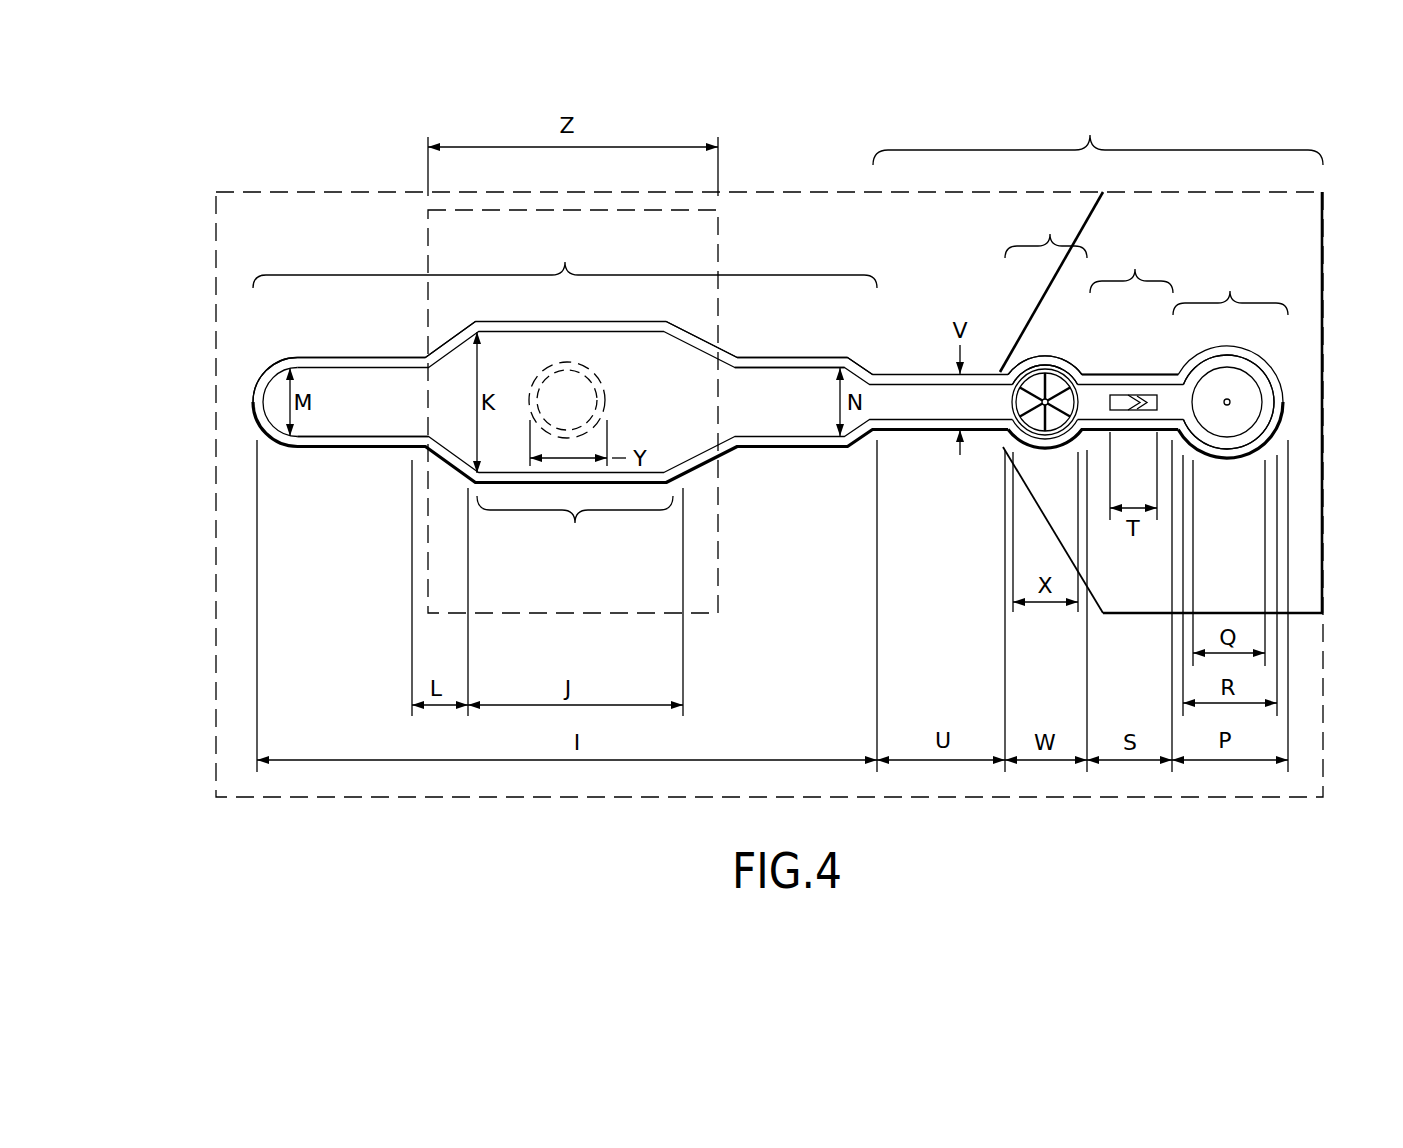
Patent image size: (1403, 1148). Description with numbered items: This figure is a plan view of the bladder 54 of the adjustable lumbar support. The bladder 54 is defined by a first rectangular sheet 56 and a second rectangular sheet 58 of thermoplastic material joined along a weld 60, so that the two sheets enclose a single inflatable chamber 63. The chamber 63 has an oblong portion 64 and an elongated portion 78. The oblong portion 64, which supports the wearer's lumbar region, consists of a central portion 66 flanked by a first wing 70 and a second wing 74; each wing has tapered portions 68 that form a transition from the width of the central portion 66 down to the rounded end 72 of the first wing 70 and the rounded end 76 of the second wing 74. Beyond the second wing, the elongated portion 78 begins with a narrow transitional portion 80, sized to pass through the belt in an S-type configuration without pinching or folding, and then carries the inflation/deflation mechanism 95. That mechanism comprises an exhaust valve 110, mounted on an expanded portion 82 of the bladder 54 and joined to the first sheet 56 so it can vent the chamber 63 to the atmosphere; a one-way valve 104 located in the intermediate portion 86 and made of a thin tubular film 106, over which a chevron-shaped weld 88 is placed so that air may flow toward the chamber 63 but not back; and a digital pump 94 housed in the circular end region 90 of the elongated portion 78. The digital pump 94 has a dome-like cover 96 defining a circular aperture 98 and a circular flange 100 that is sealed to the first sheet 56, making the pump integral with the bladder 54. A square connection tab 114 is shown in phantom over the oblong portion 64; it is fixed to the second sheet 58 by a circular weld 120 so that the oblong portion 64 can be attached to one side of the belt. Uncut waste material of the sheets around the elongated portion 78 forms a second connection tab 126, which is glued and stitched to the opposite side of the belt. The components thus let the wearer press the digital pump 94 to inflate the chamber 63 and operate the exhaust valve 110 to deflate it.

The bladder 54 is at (812, 462).
The first rectangular sheet 56 is at (782, 218).
The second rectangular sheet 58 is at (736, 418).
The weld 60 is at (340, 445).
The inflatable chamber 63 is at (822, 400).
The oblong portion 64 is at (565, 257).
The central portion 66 is at (575, 528).
The tapered portions 68 is at (444, 354).
The first wing 70 is at (355, 358).
The rounded end 72 is at (252, 402).
The second wing 74 is at (790, 357).
The rounded end 76 is at (866, 364).
The elongated portion 78 is at (1098, 130).
The transitional portion 80 is at (910, 431).
The expanded portion 82 is at (1046, 291).
The intermediate portion 86 is at (1130, 300).
The chevron-shaped weld 88 is at (1135, 432).
The second circular portion 90 is at (1230, 356).
The digital pump 94 is at (1246, 484).
The inflation/deflation mechanism 95 is at (1060, 482).
The dome-like cover 96 is at (1253, 416).
The circular aperture 98 is at (1232, 402).
The circular flange 100 is at (1267, 378).
The one-way valve 104 is at (1103, 374).
The thin tubular film 106 is at (1150, 395).
The exhaust valve 110 is at (1000, 442).
The connection tab 114 is at (677, 251).
The circular weld 120 is at (607, 398).
The second connection tab 126 is at (1262, 225).